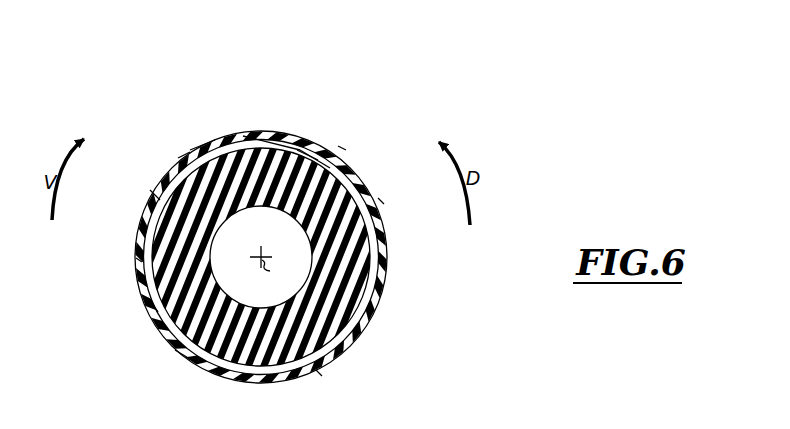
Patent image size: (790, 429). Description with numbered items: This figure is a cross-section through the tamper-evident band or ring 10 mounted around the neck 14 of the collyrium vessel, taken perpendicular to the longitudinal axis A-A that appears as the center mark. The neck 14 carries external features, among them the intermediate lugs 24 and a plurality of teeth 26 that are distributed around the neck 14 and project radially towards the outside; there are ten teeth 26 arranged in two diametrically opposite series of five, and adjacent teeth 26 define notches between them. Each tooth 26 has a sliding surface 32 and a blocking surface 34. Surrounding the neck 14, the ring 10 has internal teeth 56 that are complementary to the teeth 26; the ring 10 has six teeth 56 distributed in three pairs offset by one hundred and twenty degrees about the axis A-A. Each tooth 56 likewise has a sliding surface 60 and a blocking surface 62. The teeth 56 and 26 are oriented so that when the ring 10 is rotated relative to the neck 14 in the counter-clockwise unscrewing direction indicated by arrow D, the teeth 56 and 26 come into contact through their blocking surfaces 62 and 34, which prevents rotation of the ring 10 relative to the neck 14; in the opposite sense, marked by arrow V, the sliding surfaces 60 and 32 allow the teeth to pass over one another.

The tamper-evident band or ring 10 is at (338, 140).
The neck 14 is at (340, 300).
The intermediate lugs 24 is at (137, 258).
The teeth 26 is at (250, 136).
The sliding surface 32 is at (198, 148).
The blocking surface 34 is at (305, 148).
The teeth 56 is at (342, 146).
The sliding surface 60 is at (183, 160).
The blocking surface 62 is at (155, 195).